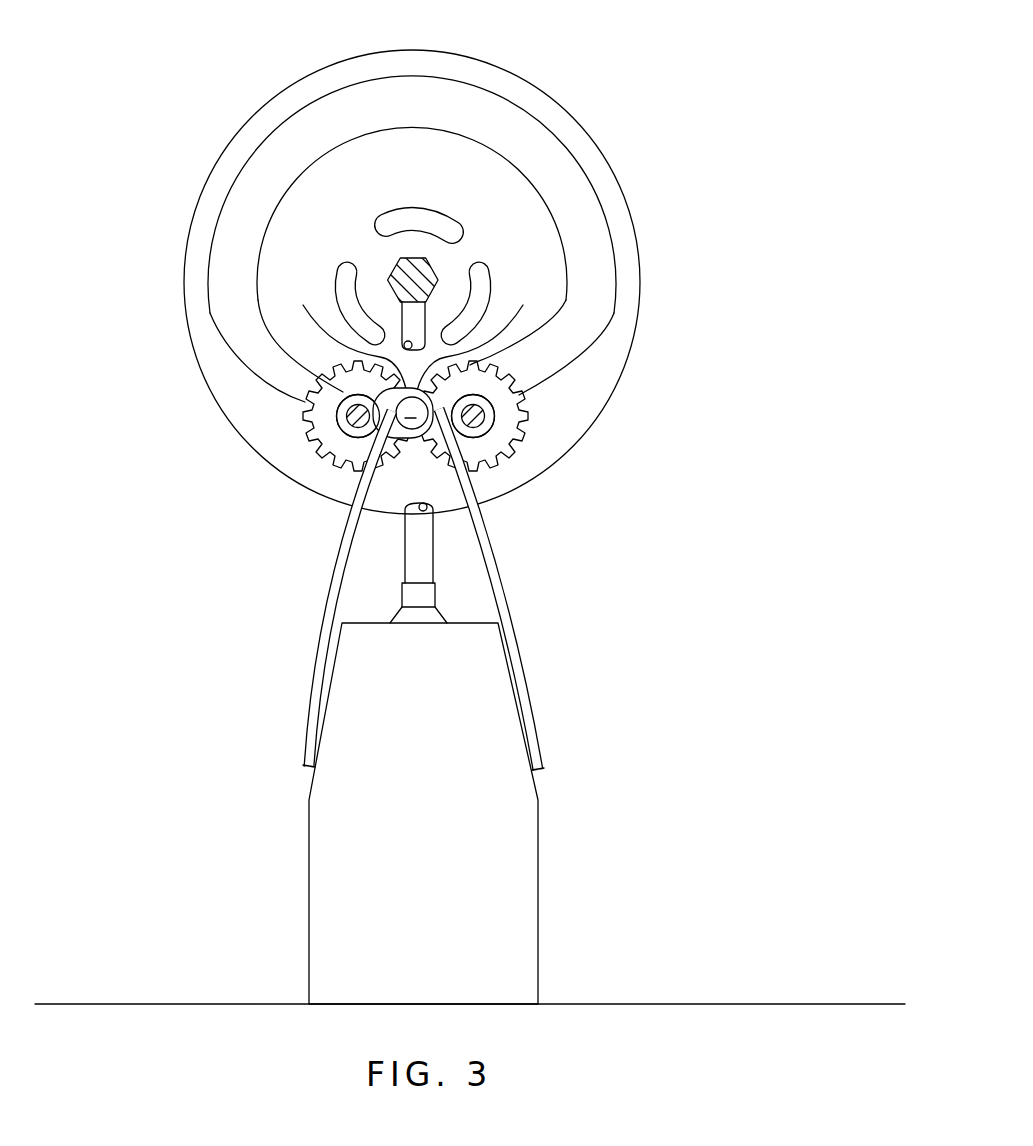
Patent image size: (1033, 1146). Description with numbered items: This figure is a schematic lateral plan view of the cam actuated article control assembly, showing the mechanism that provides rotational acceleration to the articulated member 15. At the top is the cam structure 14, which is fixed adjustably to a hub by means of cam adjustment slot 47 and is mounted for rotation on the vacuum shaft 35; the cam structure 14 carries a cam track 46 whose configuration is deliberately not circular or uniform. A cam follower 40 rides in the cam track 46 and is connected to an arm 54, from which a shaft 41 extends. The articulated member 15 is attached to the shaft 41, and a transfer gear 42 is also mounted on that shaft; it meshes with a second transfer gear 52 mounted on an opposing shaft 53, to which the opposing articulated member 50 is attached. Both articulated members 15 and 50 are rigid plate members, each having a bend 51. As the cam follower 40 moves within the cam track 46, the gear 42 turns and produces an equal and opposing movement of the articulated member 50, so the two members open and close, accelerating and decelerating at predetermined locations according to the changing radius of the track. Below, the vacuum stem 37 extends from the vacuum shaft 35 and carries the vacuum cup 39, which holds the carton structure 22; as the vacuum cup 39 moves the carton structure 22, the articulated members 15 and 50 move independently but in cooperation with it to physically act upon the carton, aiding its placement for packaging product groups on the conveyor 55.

The cam structure 14 is at (536, 105).
The cam track 46 is at (568, 190).
The cam adjustment slot 47 is at (347, 266).
The arm 54 is at (324, 302).
The cam follower 40 is at (499, 302).
The vacuum shaft 35 is at (437, 266).
The transfer gear 42 is at (303, 416).
The transfer gear 52 is at (528, 415).
The shaft 41 is at (356, 420).
The shaft 53 is at (477, 423).
The bend 51 is at (347, 530).
The vacuum stem 37 is at (412, 551).
The vacuum cup 39 is at (436, 590).
The carton structure 22 is at (538, 853).
The articulated member 15 is at (314, 710).
The opposing articulated member 50 is at (538, 737).
The conveyor 55 is at (173, 1004).